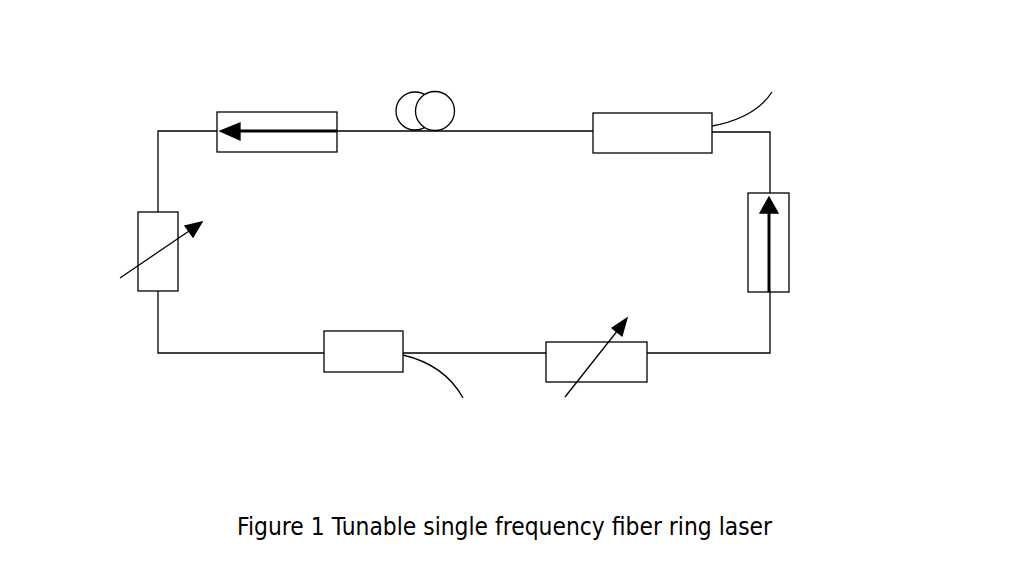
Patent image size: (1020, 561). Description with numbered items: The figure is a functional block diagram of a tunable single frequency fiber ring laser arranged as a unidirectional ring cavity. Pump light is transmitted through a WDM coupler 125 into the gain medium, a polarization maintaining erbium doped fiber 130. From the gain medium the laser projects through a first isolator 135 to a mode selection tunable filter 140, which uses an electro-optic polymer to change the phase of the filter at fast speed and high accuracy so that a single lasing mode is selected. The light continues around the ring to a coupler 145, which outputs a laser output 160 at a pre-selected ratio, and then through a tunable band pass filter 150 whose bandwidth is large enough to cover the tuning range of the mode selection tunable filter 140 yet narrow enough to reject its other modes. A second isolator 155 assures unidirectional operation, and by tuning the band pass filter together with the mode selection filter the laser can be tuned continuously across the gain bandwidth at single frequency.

The WDM 125 is at (618, 130).
The PM erbium doped fiber 130 is at (438, 108).
The first isolator 135 is at (282, 122).
The mode selection tunable filter 140 is at (168, 233).
The coupler 145 is at (385, 357).
The tunable band pass filter 150 is at (620, 368).
The second isolator 155 is at (787, 230).
The laser output 160 is at (445, 380).